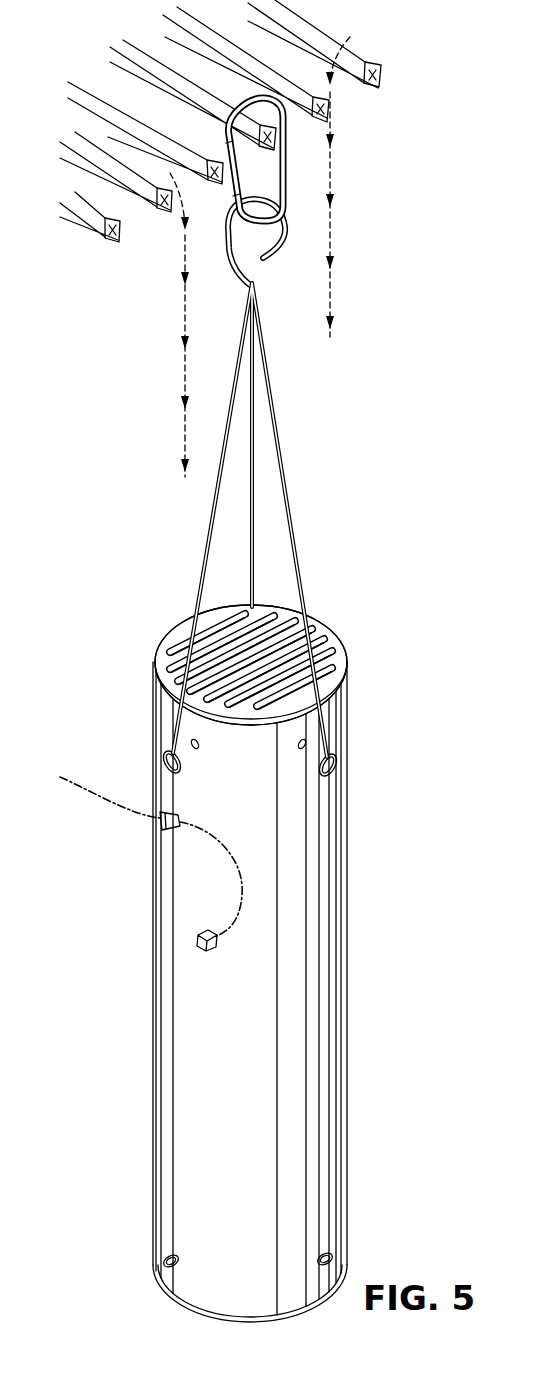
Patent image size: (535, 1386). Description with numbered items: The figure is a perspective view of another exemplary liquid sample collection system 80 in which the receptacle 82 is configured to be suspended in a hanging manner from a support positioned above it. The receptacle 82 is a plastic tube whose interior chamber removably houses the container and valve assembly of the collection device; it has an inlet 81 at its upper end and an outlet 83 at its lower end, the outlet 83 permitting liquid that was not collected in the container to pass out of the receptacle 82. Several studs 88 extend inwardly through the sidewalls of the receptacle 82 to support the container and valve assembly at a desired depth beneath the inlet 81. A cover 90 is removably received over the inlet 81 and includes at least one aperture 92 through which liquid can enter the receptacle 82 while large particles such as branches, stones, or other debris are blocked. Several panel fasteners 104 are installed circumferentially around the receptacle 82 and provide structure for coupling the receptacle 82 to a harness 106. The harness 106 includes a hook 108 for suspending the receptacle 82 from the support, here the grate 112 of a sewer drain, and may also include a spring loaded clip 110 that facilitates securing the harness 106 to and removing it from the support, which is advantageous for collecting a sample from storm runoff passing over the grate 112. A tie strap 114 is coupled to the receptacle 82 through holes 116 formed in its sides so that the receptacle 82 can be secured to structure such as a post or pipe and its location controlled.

The liquid sample collection system 80 is at (255, 938).
The inlet 81 is at (270, 600).
The receptacle 82 is at (343, 868).
The outlet 83 is at (177, 1302).
The studs 88 is at (163, 1262).
The cover 90 is at (156, 645).
The aperture 92 is at (186, 631).
The panel fasteners 104 is at (163, 757).
The harness 106 is at (282, 452).
The hook 108 is at (266, 259).
The spring loaded clip 110 is at (290, 167).
The grate 112 is at (372, 62).
The tie strap 114 is at (117, 812).
The holes 116 is at (172, 824).